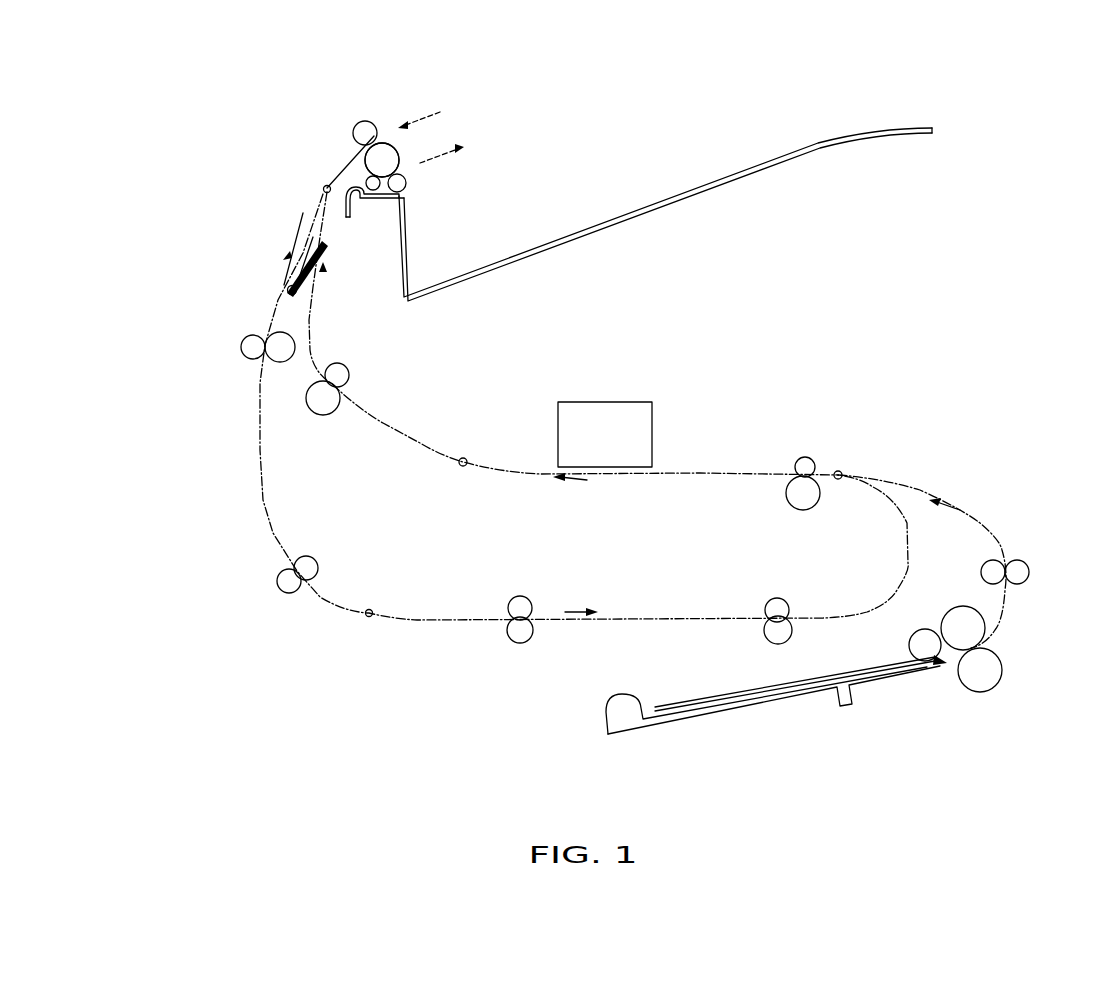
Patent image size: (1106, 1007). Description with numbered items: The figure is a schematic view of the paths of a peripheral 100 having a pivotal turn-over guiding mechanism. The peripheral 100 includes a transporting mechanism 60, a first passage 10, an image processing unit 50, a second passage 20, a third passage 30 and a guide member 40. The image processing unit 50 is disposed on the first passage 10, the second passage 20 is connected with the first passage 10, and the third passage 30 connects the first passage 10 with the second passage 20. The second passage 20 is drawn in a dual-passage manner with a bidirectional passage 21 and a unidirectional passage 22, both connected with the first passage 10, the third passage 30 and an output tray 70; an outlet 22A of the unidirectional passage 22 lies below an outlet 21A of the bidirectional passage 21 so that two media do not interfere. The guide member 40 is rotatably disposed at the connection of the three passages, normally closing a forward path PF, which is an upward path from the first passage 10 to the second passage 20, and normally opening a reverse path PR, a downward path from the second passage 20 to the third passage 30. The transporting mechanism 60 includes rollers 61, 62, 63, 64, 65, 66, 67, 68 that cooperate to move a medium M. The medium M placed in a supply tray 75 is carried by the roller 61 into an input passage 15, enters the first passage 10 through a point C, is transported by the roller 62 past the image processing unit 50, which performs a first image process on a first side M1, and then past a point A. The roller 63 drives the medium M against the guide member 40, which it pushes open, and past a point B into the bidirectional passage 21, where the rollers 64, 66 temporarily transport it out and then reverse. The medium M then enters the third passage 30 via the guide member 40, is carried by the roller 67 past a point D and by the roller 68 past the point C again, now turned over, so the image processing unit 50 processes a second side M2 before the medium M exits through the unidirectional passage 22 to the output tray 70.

The peripheral 100 is at (641, 58).
The first passage 10 is at (310, 337).
The input passage 15 is at (1000, 535).
The second passage 20 is at (278, 122).
The bidirectional passage 21 is at (365, 157).
The outlet of the bidirectional passage 21A is at (372, 140).
The unidirectional passage 22 is at (366, 180).
The outlet of the unidirectional passage 22A is at (402, 172).
The third passage 30 is at (417, 621).
The guide member 40 is at (325, 250).
The image processing unit 50 is at (610, 410).
The transporting mechanism 60 is at (818, 446).
The roller 61 is at (977, 628).
The roller 62 is at (798, 490).
The roller 63 is at (322, 414).
The roller 64 is at (388, 160).
The roller 65 is at (407, 183).
The roller 66 is at (365, 129).
The roller 67 is at (280, 362).
The roller 68 is at (783, 600).
The output tray 70 is at (558, 240).
The supply tray 75 is at (800, 700).
The point A is at (466, 458).
The point B is at (323, 190).
The point C is at (841, 472).
The point D is at (367, 617).
The medium M is at (791, 704).
The first side of the medium M1 is at (710, 700).
The second side of the medium M2 is at (687, 703).
The reverse path PR is at (295, 233).
The forward path PF is at (322, 291).